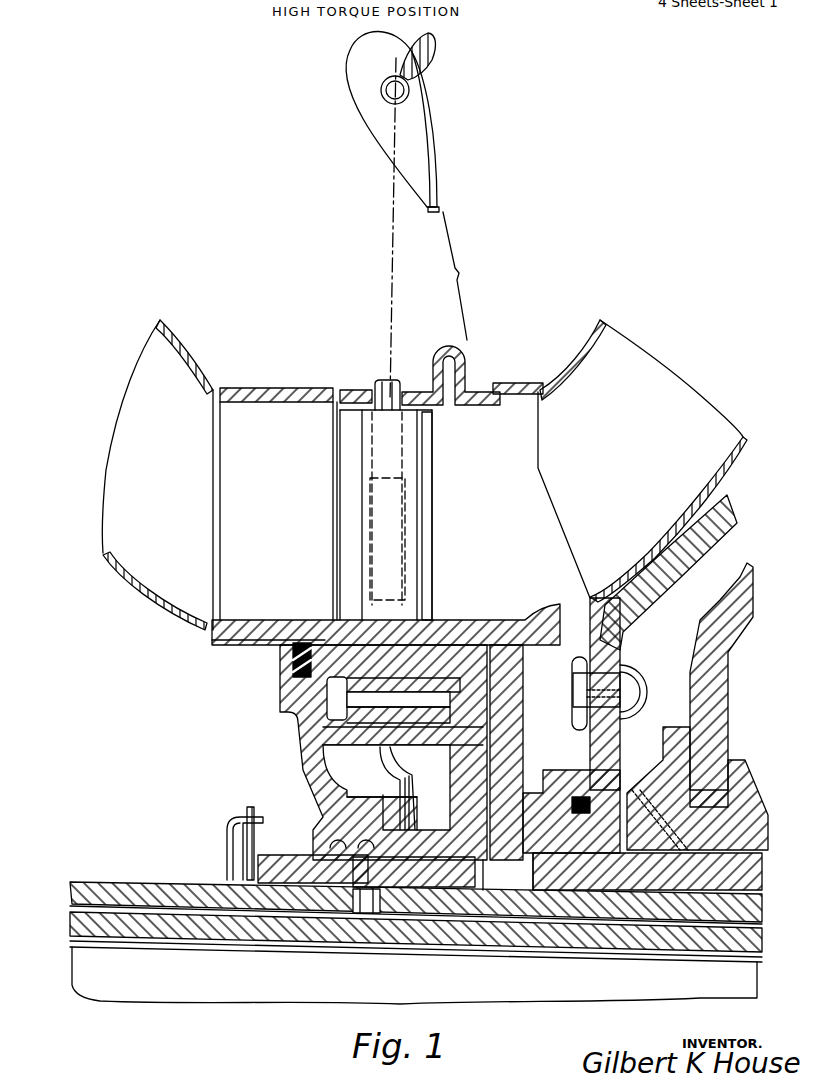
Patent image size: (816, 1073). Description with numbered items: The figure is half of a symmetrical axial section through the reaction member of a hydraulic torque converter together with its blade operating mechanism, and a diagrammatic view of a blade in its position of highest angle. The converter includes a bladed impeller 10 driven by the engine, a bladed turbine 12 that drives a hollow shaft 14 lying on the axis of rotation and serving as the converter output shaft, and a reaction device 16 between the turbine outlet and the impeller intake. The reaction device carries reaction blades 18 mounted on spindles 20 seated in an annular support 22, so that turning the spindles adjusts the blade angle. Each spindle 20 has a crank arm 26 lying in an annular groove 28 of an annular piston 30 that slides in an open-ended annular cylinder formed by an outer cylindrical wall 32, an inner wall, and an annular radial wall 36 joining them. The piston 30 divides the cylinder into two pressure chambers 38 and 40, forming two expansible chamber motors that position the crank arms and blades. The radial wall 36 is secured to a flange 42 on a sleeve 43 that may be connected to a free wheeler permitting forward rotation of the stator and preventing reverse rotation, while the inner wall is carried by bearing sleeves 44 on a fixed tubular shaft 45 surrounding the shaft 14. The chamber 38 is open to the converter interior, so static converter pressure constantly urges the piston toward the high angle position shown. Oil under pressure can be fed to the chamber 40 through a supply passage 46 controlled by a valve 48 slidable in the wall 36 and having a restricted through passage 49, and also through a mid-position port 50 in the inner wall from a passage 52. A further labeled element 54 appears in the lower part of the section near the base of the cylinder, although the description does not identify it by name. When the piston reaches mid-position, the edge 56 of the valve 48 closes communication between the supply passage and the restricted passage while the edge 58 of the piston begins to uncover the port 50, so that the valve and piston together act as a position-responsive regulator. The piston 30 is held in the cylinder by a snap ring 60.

The bladed impeller 10 is at (680, 378).
The bladed turbine 12 is at (124, 412).
The hollow shaft 14 is at (92, 920).
The reaction device 16 is at (464, 370).
The reaction blade 18 is at (417, 116).
The spindle 20 is at (390, 92).
The annular support 22 is at (477, 620).
The crank arm 26 is at (420, 52).
The annular groove 28 is at (347, 828).
The annular piston 30 is at (305, 748).
The outer cylindrical wall 32 is at (250, 640).
The annular radial wall 36 is at (462, 752).
The pressure chamber 38 is at (268, 672).
The pressure chamber 40 is at (335, 762).
The flange 42 is at (510, 756).
The sleeve 43 is at (745, 878).
The bearing sleeve 44 is at (318, 890).
The fixed tubular shaft 45 is at (180, 890).
The supply passage 46 is at (537, 857).
The valve 48 is at (520, 690).
The restricted through passage 49 is at (422, 700).
The mid-position port 50 is at (398, 868).
The passage 52 is at (368, 914).
The block 54 is at (300, 862).
The edge of valve 56 is at (448, 700).
The edge of piston 58 is at (506, 871).
The snap ring 60 is at (262, 836).